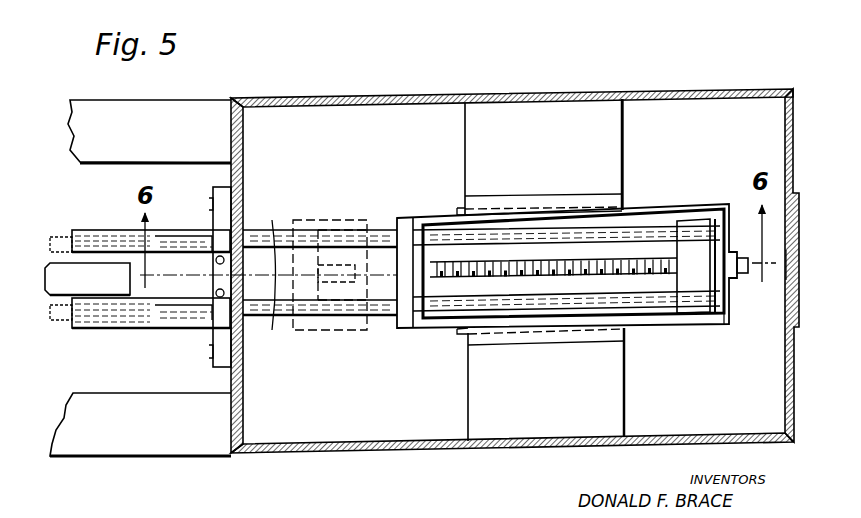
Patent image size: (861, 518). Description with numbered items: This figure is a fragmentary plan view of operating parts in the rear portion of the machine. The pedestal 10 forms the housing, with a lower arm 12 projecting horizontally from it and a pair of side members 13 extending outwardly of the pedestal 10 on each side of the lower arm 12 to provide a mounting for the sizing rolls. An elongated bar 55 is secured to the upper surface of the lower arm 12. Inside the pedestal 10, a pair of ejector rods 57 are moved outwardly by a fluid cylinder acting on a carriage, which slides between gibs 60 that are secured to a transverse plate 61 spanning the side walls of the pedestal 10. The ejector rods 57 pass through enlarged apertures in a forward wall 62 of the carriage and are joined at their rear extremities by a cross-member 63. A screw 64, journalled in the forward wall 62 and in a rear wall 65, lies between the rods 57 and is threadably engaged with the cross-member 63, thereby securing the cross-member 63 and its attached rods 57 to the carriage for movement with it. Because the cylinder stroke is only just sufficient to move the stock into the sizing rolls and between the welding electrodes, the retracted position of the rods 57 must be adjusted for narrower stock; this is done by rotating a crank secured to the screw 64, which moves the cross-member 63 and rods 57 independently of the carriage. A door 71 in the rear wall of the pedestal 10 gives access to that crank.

The pedestal 10 is at (391, 453).
The lower arm 12 is at (115, 340).
The side members 13 is at (193, 108).
The elongated bar 55 is at (80, 277).
The ejector rods 57 is at (273, 240).
The gibs 60 is at (527, 206).
The transverse plate 61 is at (606, 152).
The forward wall 62 is at (409, 243).
The cross-member 63 is at (692, 238).
The screw 64 is at (620, 270).
The rear wall 65 is at (723, 314).
The door 71 is at (792, 293).